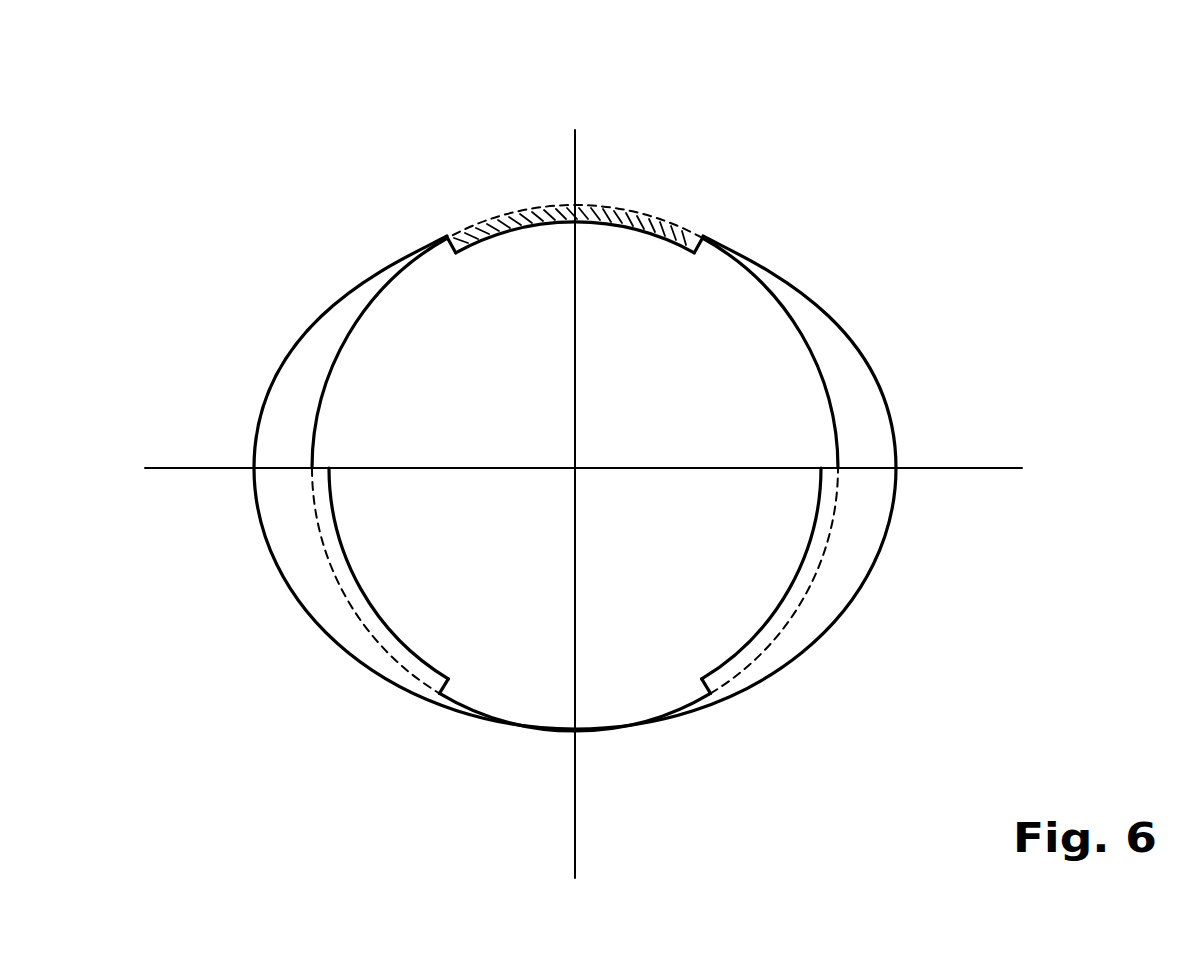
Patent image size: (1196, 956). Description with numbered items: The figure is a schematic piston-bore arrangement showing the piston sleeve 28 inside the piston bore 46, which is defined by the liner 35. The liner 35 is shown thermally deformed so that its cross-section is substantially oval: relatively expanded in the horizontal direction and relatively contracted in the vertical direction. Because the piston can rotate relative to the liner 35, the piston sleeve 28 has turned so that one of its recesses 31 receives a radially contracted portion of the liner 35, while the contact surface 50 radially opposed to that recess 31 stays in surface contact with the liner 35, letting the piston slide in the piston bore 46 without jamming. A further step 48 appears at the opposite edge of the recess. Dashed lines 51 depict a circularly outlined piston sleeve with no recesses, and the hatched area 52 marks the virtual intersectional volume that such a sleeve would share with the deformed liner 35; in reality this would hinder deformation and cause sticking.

The piston sleeve 28 is at (727, 290).
The recess 31 is at (462, 238).
The liner 35 is at (885, 403).
The piston bore 46 is at (877, 520).
The second step 48 is at (680, 238).
The contact surface 50 is at (337, 352).
The dashed lines 51 is at (603, 203).
The hatched area 52 is at (562, 204).